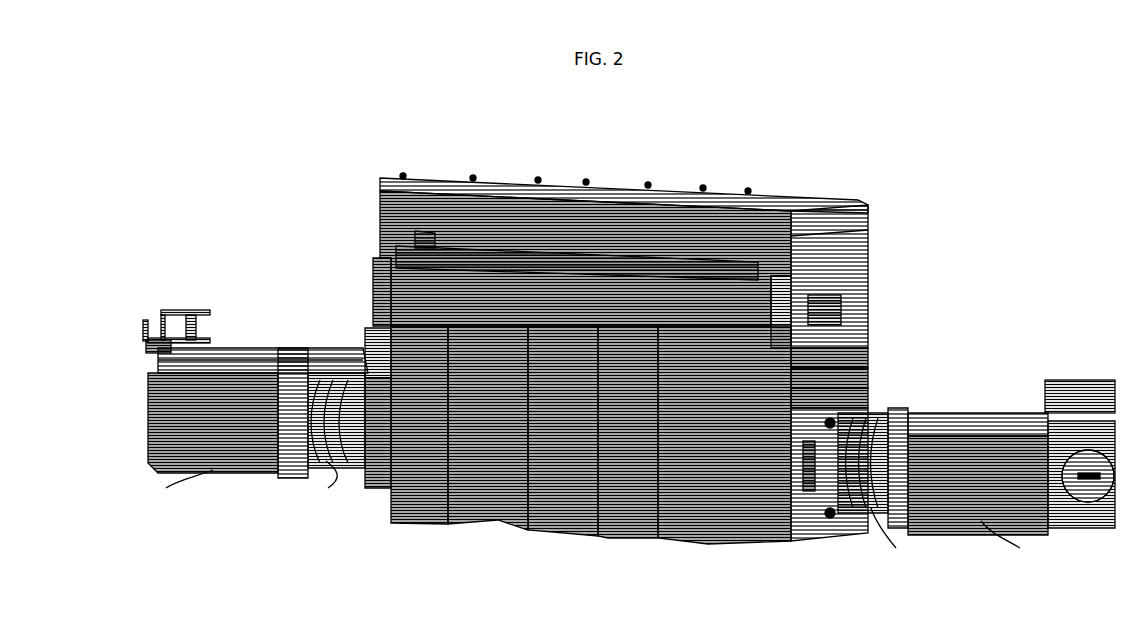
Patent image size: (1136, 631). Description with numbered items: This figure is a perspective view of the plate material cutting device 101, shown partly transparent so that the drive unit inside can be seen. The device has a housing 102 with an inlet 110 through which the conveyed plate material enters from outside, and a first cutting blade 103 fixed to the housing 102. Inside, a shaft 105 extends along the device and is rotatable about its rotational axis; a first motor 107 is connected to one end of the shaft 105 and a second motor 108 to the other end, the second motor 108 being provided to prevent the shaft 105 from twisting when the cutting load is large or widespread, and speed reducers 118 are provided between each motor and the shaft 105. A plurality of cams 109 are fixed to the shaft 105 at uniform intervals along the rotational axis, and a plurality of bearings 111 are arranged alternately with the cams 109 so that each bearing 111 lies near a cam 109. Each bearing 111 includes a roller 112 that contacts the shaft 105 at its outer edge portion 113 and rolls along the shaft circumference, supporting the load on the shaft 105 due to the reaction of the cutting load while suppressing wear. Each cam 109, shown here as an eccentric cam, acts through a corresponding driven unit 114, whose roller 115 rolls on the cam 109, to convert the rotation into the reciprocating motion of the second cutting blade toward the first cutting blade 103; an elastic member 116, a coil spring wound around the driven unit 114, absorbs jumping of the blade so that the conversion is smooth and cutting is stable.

The plate material cutting device 101 is at (412, 148).
The housing 102 is at (853, 200).
The first cutting blade 103 is at (625, 215).
The shaft 105 is at (485, 513).
The first motor 107 is at (192, 462).
The second motor 108 is at (973, 520).
The cam 109 is at (387, 512).
The inlet 110 is at (372, 207).
The bearing 111 is at (628, 527).
The roller 112 is at (560, 525).
The outer edge portion 113 is at (677, 520).
The driven unit 114 is at (860, 370).
The roller 115 is at (860, 392).
The elastic member 116 is at (830, 346).
The speed reducer 118 is at (328, 445).